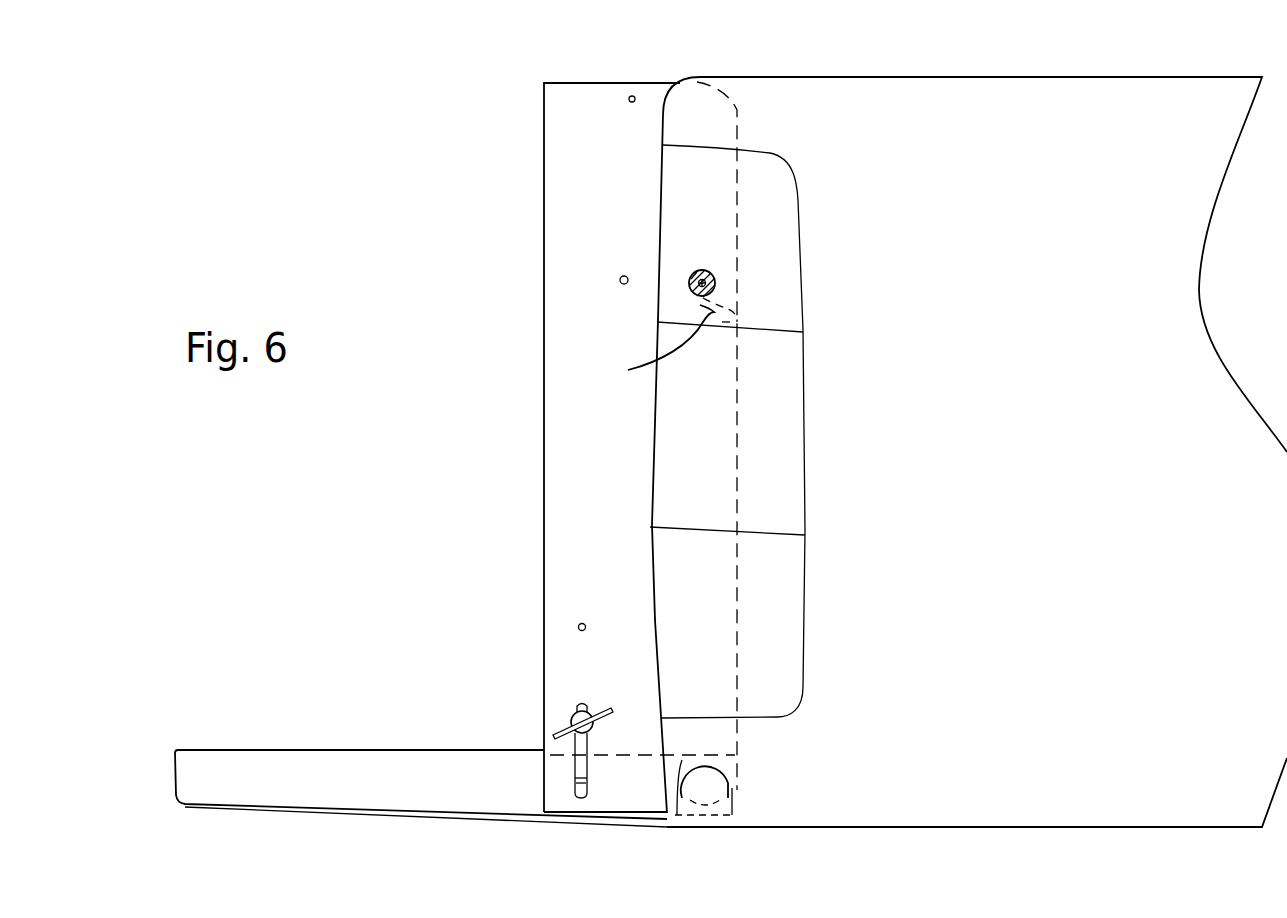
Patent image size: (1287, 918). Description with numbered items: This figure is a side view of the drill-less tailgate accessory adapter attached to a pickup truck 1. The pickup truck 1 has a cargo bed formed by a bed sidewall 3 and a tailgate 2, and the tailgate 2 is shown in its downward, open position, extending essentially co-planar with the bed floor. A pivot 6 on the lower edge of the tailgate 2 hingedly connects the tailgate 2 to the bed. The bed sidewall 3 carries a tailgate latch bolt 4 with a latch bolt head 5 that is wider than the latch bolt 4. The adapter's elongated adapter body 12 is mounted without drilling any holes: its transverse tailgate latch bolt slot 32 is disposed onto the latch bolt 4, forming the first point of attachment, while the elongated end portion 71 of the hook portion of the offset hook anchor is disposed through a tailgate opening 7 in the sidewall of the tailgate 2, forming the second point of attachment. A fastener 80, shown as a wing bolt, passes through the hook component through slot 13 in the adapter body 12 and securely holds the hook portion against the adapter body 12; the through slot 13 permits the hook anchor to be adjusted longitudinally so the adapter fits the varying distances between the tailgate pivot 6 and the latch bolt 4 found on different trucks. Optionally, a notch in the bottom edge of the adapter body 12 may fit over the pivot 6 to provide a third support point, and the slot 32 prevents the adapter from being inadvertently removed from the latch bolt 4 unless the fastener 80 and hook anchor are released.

The pickup truck 1 is at (1001, 66).
The tailgate 2 is at (383, 750).
The bed sidewall 3 is at (998, 422).
The tailgate latch bolt 4 is at (690, 283).
The latch bolt head 5 is at (710, 275).
The pivot 6 is at (710, 789).
The tailgate opening 7 is at (575, 778).
The elongated adapter body 12 is at (540, 667).
The hook component through slot 13 is at (586, 705).
The tailgate latch bolt slot 32 is at (649, 348).
The elongated end portion 71 is at (587, 788).
The fastener 80 is at (571, 718).